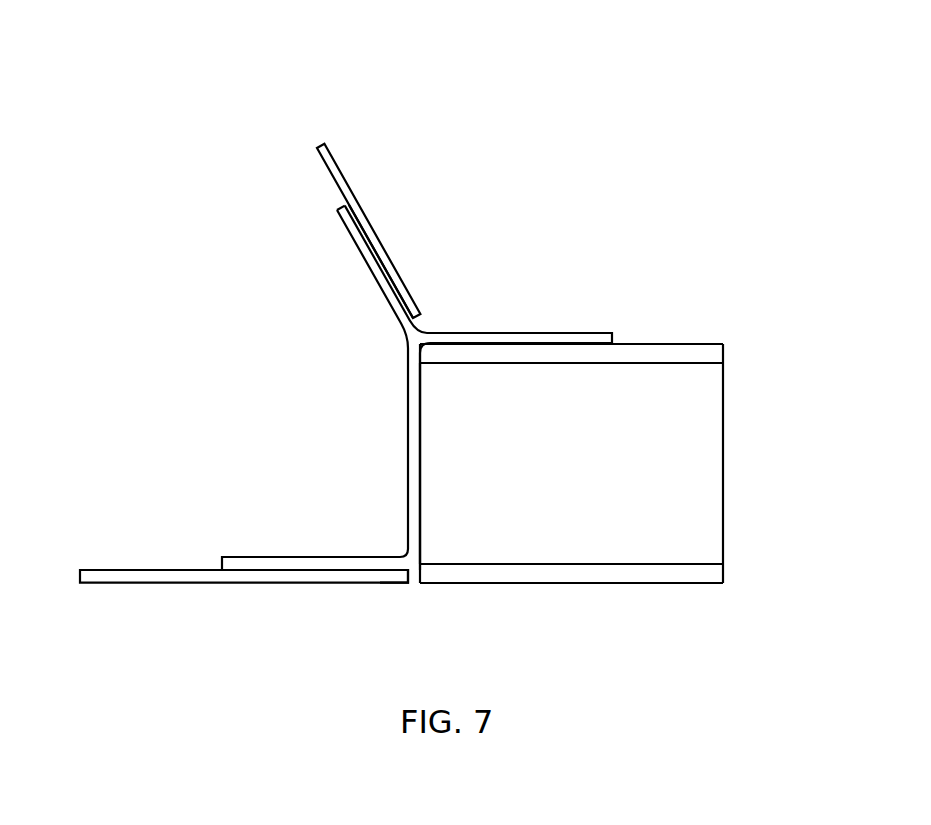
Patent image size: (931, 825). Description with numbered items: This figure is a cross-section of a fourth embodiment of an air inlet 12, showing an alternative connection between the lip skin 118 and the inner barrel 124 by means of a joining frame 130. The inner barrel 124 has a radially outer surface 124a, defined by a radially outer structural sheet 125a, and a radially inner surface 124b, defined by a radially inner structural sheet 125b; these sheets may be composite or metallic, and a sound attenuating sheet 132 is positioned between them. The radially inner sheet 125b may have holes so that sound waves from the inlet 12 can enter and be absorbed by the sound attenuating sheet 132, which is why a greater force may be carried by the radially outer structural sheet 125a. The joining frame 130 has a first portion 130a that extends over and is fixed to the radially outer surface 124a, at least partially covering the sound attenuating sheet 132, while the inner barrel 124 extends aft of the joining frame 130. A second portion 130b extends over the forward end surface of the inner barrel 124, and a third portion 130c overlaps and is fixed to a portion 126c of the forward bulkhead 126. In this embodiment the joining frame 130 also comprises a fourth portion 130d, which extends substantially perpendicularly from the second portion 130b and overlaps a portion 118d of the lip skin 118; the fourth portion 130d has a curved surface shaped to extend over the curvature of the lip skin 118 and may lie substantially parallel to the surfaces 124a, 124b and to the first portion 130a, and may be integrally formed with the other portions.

The inlet 12 is at (66, 117).
The forward bulkhead 126 is at (392, 226).
The portion of the forward bulkhead 126c is at (380, 241).
The joining frame 130 is at (417, 388).
The first portion of the joining frame 130a is at (583, 333).
The second portion of the joining frame 130b is at (405, 455).
The third portion of the joining frame 130c is at (360, 256).
The fourth portion of the joining frame 130d is at (297, 558).
The lip skin 118 is at (255, 609).
The portion of the lip skin 118d is at (375, 583).
The inner barrel 124 is at (630, 474).
The radially outer surface 124a is at (658, 344).
The radially inner surface 124b is at (678, 583).
The radially outer structural sheet 125a is at (725, 353).
The radially inner structural sheet 125b is at (725, 573).
The sound attenuating sheet 132 is at (715, 463).